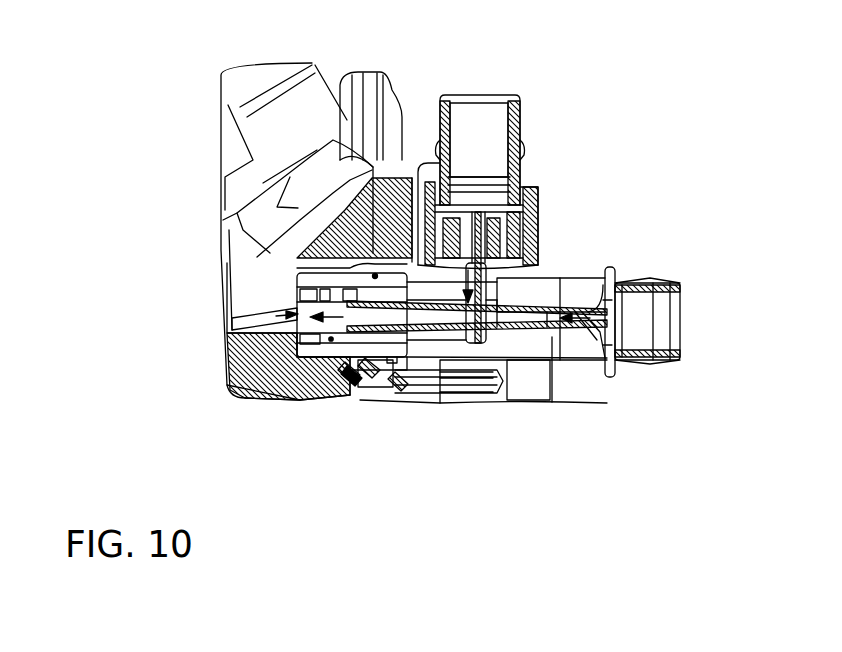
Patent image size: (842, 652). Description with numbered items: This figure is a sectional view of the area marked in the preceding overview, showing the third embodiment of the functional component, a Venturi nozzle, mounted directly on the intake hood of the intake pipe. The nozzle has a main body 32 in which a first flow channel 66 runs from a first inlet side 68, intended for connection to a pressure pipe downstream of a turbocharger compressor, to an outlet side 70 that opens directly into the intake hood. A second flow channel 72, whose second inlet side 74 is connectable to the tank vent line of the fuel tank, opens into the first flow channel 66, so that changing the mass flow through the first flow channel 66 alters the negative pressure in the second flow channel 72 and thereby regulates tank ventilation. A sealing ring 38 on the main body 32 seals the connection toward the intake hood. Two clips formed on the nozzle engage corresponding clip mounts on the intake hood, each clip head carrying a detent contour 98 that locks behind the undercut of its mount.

The main body 32 is at (515, 237).
The sealing ring 38 is at (327, 397).
The first flow channel 66 is at (546, 322).
The first inlet side 68 is at (665, 315).
The outlet side 70 is at (254, 400).
The second flow channel 72 is at (490, 131).
The second inlet side 74 is at (477, 85).
The detent contour 98 is at (300, 268).